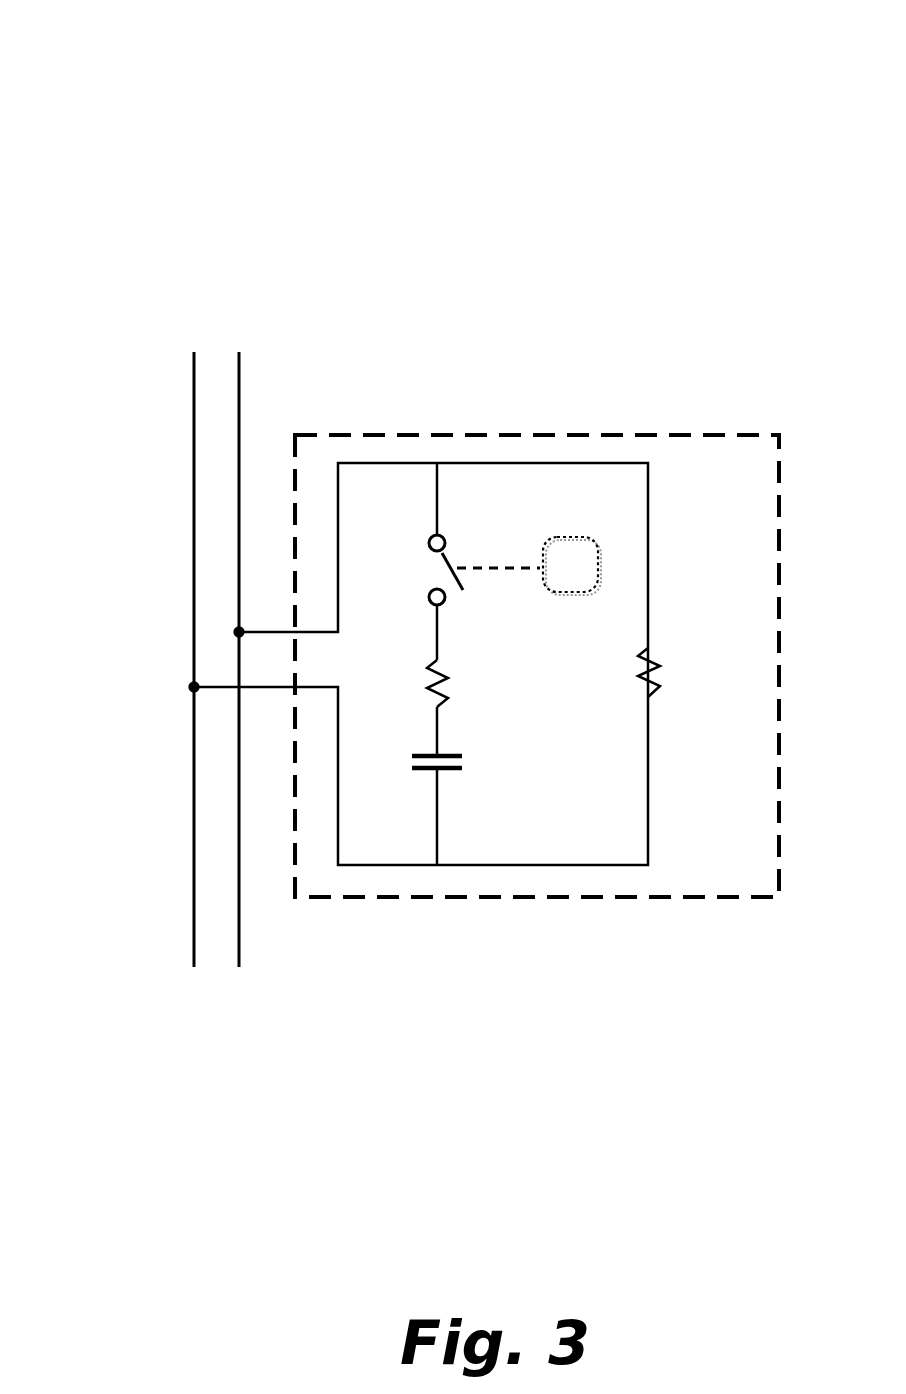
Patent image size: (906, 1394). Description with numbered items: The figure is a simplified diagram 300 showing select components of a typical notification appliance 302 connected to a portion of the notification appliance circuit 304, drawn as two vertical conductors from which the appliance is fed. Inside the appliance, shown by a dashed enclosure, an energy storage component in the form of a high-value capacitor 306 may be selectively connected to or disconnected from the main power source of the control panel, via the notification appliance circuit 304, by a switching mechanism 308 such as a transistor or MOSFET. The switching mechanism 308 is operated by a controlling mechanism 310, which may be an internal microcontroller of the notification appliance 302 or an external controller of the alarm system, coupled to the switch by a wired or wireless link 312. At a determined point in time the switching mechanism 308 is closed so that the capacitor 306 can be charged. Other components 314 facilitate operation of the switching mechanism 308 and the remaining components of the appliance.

The simplified diagram 300 is at (156, 74).
The notification appliance 302 is at (527, 432).
The notification appliance circuit 304 is at (193, 382).
The high-value capacitor 306 is at (452, 753).
The switching mechanism 308 is at (430, 569).
The controlling mechanism 310 is at (572, 566).
The wired or wireless link 312 is at (538, 568).
The other components 314 is at (437, 658).